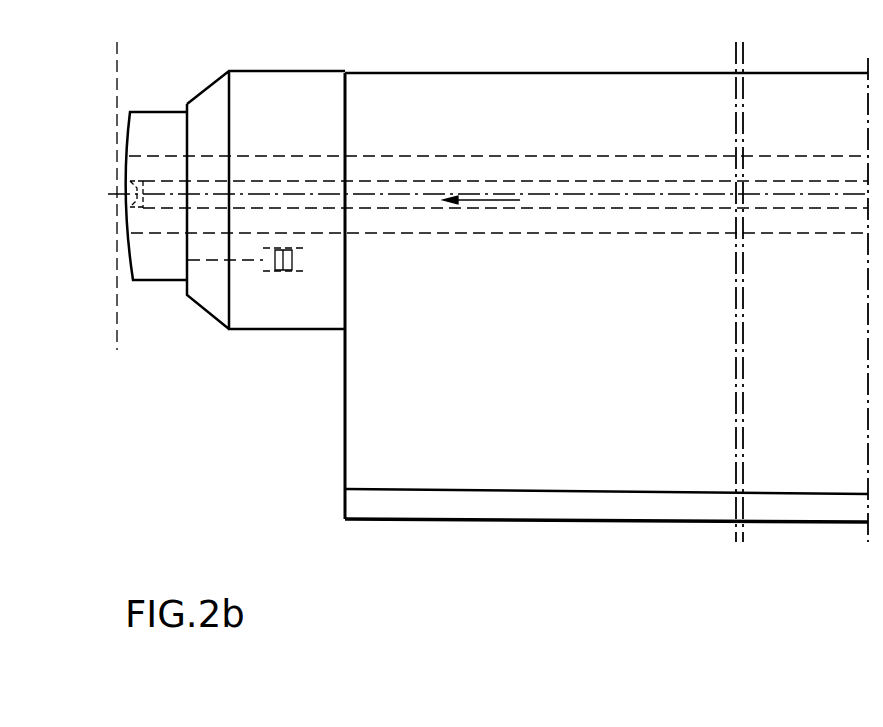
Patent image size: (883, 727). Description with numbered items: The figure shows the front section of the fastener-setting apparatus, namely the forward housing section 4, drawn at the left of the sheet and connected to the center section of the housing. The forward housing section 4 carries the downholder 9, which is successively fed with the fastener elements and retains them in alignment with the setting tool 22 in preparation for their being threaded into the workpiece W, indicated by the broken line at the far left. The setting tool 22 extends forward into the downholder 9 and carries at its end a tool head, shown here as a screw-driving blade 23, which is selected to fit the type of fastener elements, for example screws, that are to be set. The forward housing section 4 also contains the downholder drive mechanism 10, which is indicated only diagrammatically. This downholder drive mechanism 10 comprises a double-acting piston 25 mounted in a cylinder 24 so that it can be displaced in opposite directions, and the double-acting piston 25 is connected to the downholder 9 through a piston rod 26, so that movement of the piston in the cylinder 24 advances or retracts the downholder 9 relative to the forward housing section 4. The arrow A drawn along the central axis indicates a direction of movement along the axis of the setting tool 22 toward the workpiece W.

The forward housing section 4 is at (437, 120).
The setting tool 22 is at (575, 186).
The downholder 9 is at (161, 283).
The piston rod 26 is at (220, 261).
The screw-driving blade 23 is at (138, 185).
The cylinder 24 is at (303, 272).
The downholder drive mechanism 10 is at (283, 272).
The double-acting piston 25 is at (305, 262).
The workpiece W is at (116, 80).
The flow direction arrow A is at (493, 203).